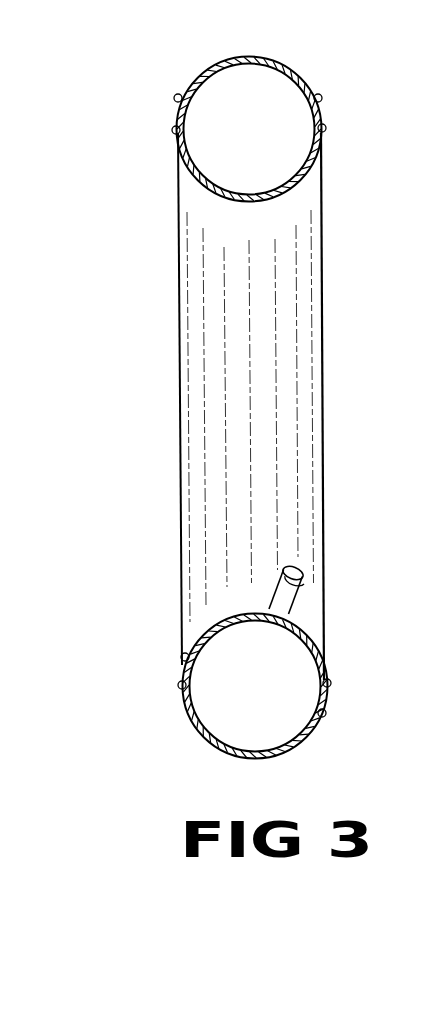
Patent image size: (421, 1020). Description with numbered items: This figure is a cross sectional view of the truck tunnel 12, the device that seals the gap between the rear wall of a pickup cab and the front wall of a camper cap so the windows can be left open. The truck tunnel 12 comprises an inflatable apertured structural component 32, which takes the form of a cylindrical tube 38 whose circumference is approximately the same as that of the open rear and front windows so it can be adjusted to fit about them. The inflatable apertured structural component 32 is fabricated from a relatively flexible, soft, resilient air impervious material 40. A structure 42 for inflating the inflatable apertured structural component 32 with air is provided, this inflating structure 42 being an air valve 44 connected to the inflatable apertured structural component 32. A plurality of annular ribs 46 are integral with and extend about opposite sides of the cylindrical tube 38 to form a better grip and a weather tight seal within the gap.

The truck tunnel 12 is at (243, 388).
The inflatable apertured structural component 32 is at (144, 229).
The cylindrical tube 38 is at (303, 442).
The air impervious material 40 is at (290, 70).
The structure for inflating 42 is at (297, 599).
The air valve 44 is at (282, 608).
The annular ribs 46 is at (319, 97).